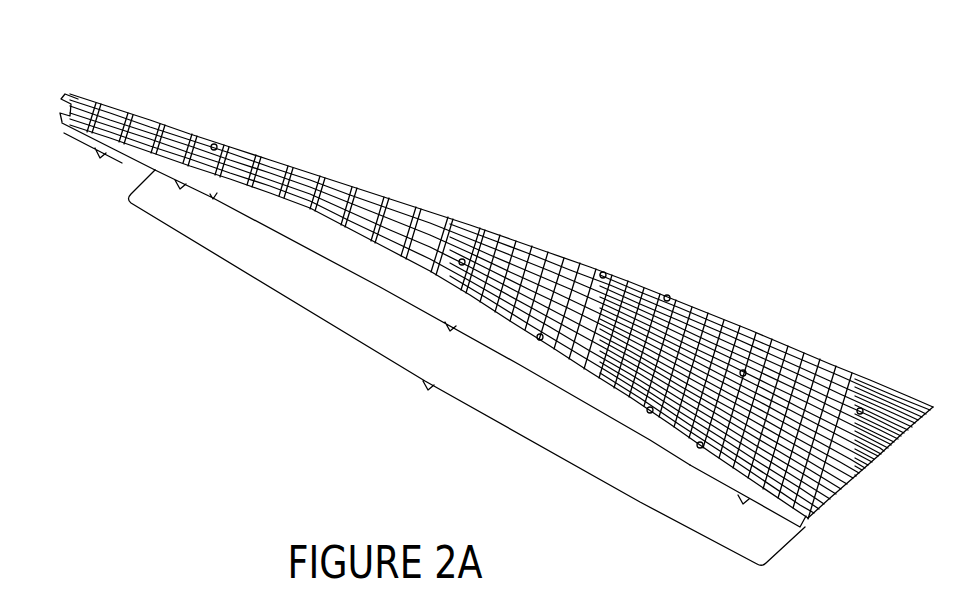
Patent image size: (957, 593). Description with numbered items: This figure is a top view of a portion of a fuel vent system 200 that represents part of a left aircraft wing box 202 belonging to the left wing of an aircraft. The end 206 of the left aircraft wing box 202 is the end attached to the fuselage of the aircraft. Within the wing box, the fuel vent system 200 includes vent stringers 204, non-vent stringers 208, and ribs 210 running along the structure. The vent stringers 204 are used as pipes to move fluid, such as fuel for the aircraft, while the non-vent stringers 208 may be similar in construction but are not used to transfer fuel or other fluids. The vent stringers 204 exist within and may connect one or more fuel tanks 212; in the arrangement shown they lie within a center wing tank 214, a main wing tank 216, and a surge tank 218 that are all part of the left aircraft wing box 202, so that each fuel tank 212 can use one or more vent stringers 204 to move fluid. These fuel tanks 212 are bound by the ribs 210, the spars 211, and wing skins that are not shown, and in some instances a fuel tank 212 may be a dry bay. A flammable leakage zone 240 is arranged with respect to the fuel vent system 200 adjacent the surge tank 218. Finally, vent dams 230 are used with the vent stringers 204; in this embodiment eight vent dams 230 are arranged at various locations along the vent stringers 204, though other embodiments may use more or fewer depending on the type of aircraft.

The fuel vent system 200 is at (768, 174).
The left aircraft wing box 202 is at (690, 290).
The vent stringers 204 is at (260, 165).
The end of the left aircraft wing box 206 is at (853, 483).
The non-vent stringers 208 is at (500, 253).
The ribs 210 is at (98, 105).
The spars 211 is at (590, 263).
The fuel tanks 212 is at (467, 367).
The center wing tank 214 is at (748, 501).
The main wing tank 216 is at (451, 331).
The surge tank 218 is at (186, 200).
The vent dams 230 is at (165, 128).
The flammable leakage zone 240 is at (108, 159).